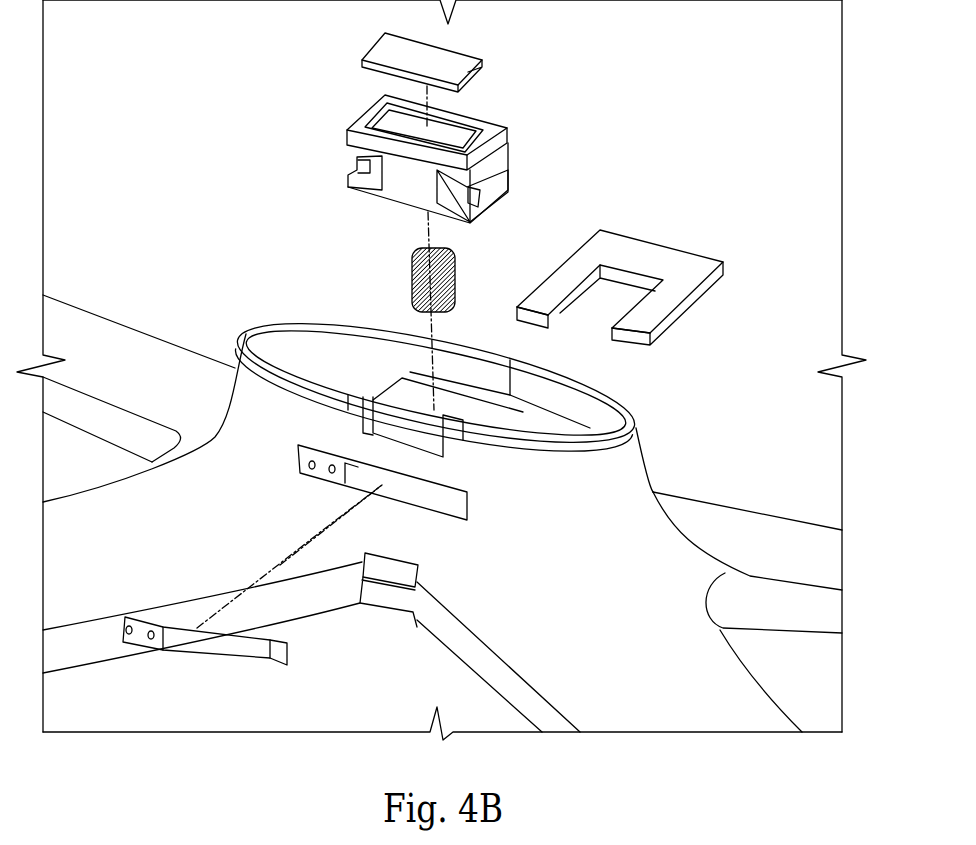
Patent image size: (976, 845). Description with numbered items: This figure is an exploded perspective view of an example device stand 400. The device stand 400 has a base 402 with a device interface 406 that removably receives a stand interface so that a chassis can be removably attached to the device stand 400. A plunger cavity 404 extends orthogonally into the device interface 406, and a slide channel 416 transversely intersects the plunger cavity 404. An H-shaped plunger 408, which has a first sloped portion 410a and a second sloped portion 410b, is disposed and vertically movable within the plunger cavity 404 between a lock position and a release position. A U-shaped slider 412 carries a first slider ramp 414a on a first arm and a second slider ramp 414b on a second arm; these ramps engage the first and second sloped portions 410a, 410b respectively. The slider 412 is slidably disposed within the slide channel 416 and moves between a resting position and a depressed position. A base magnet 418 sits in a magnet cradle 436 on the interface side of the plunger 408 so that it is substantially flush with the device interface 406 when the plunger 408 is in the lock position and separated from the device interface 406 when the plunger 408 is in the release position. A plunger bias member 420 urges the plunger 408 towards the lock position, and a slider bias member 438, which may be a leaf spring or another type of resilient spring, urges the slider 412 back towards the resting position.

The device stand 400 is at (196, 284).
The base 402 is at (250, 433).
The plunger cavity 404 is at (480, 410).
The device interface 406 is at (347, 373).
The H-shaped plunger 408 is at (420, 154).
The first sloped portion 410a is at (487, 193).
The second sloped portion 410b is at (358, 172).
The U-shaped slider 412 is at (643, 317).
The first slider ramp 414a is at (653, 335).
The second slider ramp 414b is at (556, 312).
The slide channel 416 is at (423, 492).
The base magnet 418 is at (468, 72).
The plunger bias member 420 is at (453, 278).
The magnet cradle 436 is at (455, 127).
The slider bias member 438 is at (207, 653).